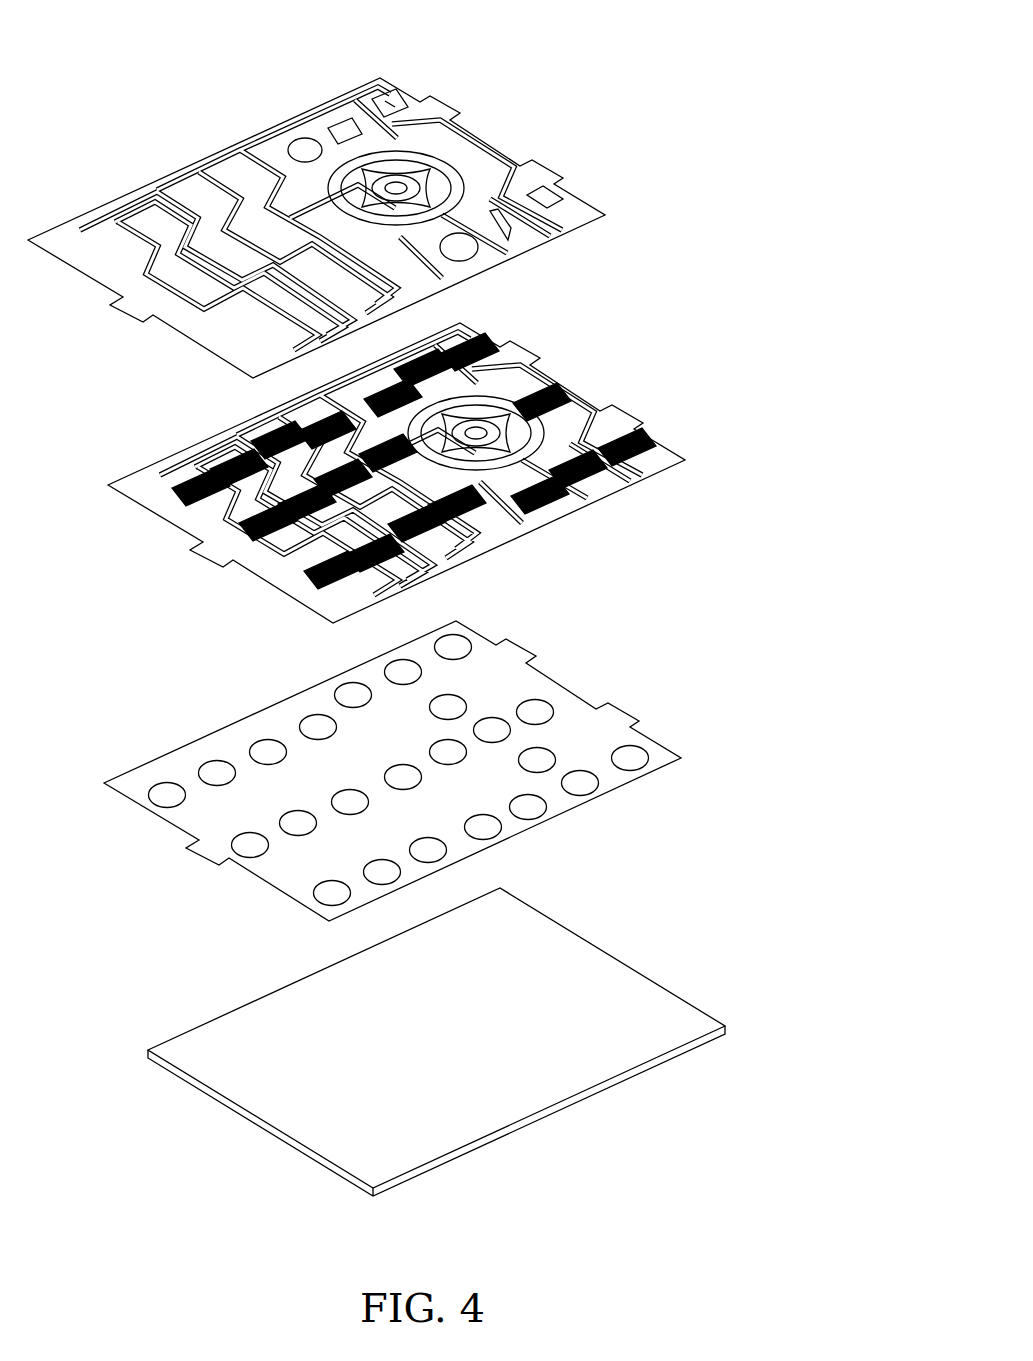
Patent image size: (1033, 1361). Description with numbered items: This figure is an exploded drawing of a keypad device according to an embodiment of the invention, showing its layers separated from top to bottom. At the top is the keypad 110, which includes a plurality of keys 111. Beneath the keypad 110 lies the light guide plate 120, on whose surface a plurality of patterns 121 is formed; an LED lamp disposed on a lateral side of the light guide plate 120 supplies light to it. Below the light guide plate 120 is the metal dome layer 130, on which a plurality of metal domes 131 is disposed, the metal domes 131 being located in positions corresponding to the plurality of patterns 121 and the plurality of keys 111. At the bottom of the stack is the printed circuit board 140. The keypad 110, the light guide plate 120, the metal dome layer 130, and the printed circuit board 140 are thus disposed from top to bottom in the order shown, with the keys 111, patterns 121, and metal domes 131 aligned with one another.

The keypad 110 is at (334, 201).
The keys 111 is at (362, 102).
The light guide plate 120 is at (431, 449).
The patterns 121 is at (587, 447).
The metal dome layer 130 is at (444, 760).
The metal domes 131 is at (630, 762).
The printed circuit board 140 is at (605, 995).